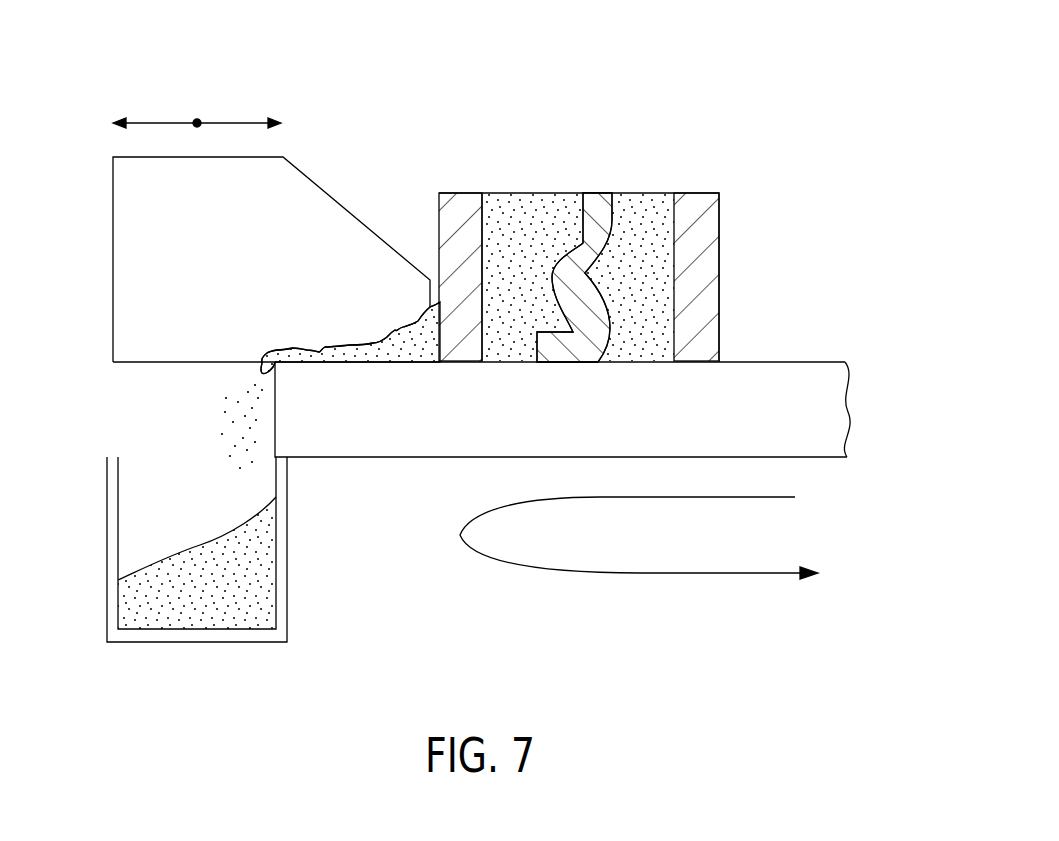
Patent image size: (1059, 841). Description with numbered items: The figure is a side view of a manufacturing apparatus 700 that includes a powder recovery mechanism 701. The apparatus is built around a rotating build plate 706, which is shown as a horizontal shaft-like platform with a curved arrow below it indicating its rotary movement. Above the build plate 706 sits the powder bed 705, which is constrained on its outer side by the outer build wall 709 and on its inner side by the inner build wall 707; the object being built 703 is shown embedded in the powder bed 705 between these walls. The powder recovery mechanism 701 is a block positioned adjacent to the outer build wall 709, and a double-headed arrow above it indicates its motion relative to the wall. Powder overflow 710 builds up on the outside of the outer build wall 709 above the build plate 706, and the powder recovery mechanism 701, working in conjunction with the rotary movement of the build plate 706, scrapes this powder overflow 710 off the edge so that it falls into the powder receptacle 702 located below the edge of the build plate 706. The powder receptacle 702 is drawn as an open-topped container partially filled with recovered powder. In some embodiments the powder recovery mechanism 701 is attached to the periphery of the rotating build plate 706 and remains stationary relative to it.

The manufacturing apparatus 700 is at (810, 115).
The powder recovery mechanism 701 is at (125, 236).
The powder receptacle 702 is at (110, 546).
The object being built 703 is at (590, 207).
The powder bed 705 is at (530, 205).
The build plate 706 is at (400, 440).
The inner build wall 707 is at (687, 205).
The outer build wall 709 is at (452, 197).
The powder overflow 710 is at (402, 340).